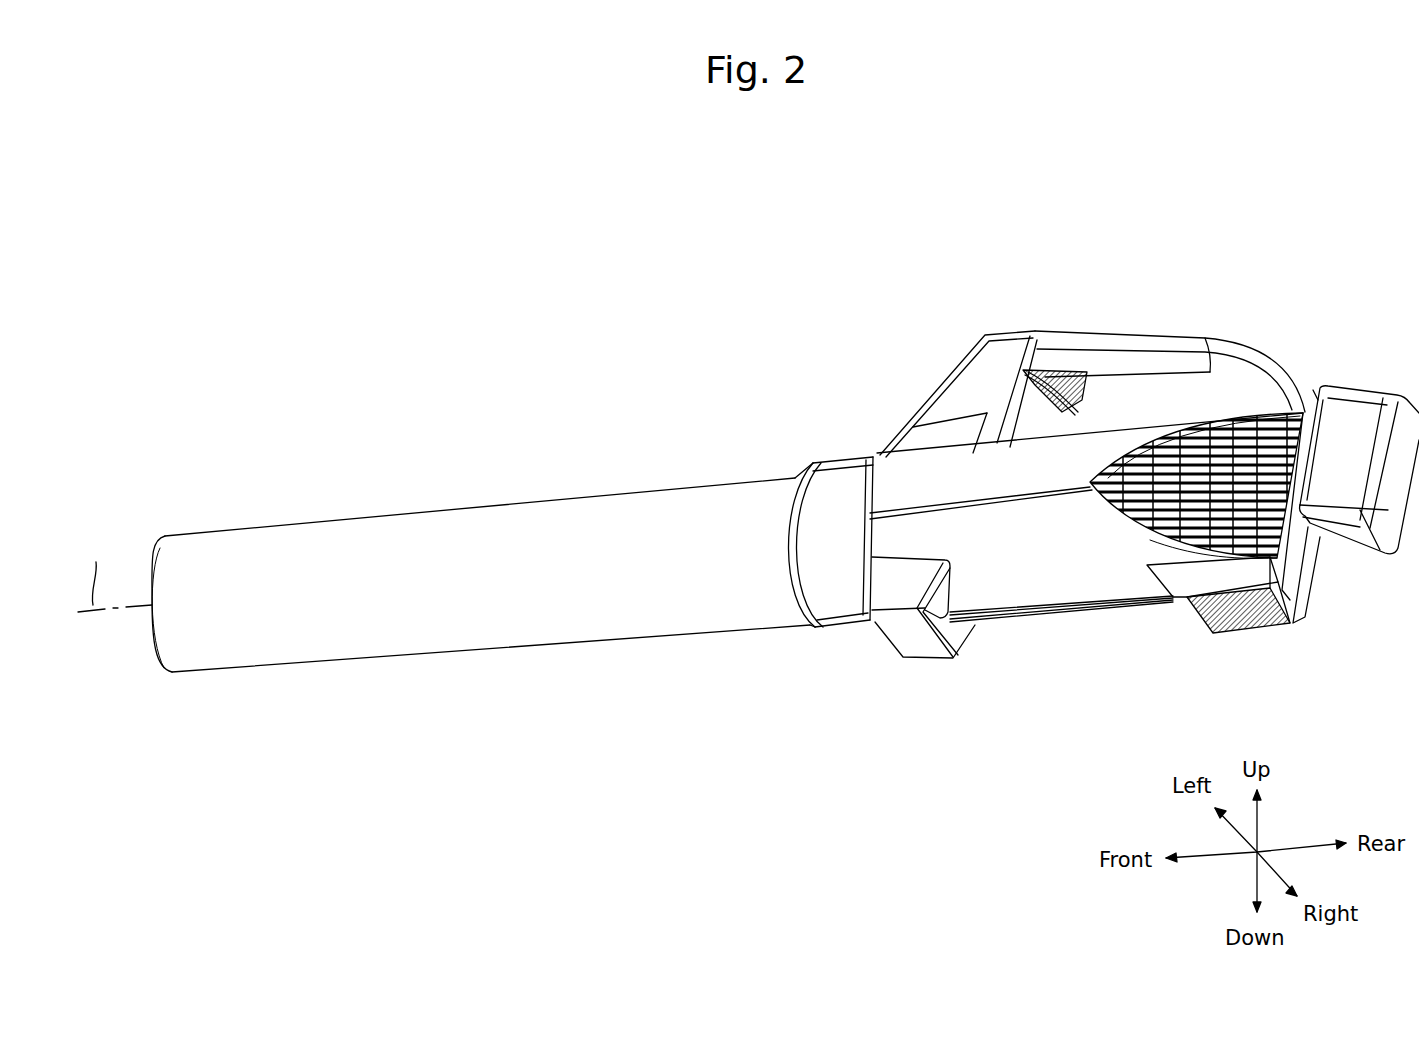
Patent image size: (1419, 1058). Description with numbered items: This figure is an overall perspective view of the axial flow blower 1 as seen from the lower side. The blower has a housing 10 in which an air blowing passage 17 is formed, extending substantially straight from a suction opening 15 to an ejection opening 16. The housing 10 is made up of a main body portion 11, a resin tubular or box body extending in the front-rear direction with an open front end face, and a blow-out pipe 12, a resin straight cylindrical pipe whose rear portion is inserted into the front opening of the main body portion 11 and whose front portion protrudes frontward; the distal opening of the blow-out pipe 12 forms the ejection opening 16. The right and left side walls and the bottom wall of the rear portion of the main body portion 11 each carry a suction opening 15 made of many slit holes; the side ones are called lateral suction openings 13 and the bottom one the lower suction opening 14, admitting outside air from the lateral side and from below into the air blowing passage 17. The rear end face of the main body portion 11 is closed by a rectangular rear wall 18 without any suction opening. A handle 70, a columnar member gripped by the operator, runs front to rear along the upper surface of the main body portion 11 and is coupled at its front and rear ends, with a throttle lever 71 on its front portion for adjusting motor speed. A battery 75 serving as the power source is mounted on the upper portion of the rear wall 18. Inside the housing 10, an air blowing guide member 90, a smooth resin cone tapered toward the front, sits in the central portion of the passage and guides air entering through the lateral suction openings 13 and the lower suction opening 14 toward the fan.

The axial flow blower 1 is at (803, 385).
The housing 10 is at (1045, 556).
The main body portion 11 is at (1012, 620).
The blow-out pipe 12 is at (431, 508).
The lateral suction opening 13 is at (1172, 540).
The lower suction opening 14 is at (1252, 625).
The suction opening 15 is at (1212, 620).
The ejection opening 16 is at (157, 636).
The air blowing passage 17 is at (1208, 490).
The rear wall 18 is at (1313, 567).
The handle 70 is at (1120, 334).
The throttle lever 71 is at (1085, 388).
The battery 75 is at (1360, 388).
The air blowing guide member 90 is at (1222, 485).